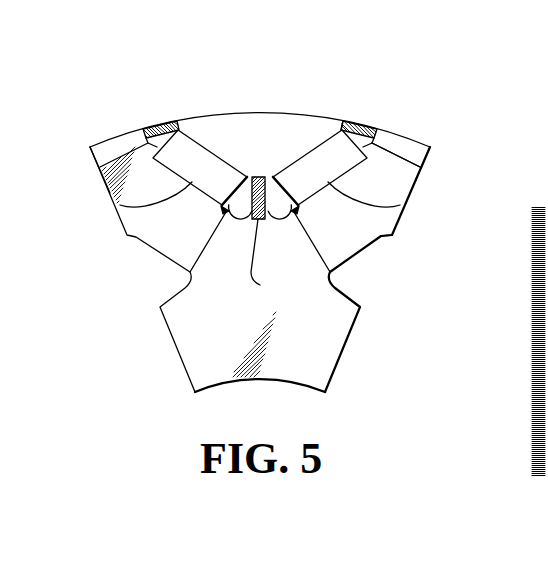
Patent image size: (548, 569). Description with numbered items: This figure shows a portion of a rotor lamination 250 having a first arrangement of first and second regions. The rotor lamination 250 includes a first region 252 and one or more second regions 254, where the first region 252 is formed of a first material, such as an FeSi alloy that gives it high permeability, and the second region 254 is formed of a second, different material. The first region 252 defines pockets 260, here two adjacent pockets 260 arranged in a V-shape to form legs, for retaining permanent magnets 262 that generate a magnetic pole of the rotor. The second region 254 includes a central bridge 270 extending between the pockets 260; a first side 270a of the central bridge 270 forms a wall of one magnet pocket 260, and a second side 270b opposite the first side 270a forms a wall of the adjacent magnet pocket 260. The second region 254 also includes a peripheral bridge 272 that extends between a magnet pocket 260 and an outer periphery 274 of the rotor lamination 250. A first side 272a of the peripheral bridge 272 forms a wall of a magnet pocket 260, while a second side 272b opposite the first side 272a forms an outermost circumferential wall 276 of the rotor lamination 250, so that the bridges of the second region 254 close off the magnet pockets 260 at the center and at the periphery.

The rotor lamination 250 is at (153, 69).
The first region 252 is at (198, 347).
The second region 254 is at (158, 126).
The pockets 260 is at (99, 169).
The permanent magnets 262 is at (120, 205).
The central bridge 270 is at (260, 285).
The first side of the central bridge 270a is at (190, 272).
The second side of the central bridge 270b is at (330, 272).
The peripheral bridge 272 is at (147, 130).
The first side of the peripheral bridge 272a is at (335, 125).
The second side of the peripheral bridge 272b is at (366, 125).
The outer periphery 274 is at (378, 137).
The outermost circumferential wall 276 is at (405, 140).